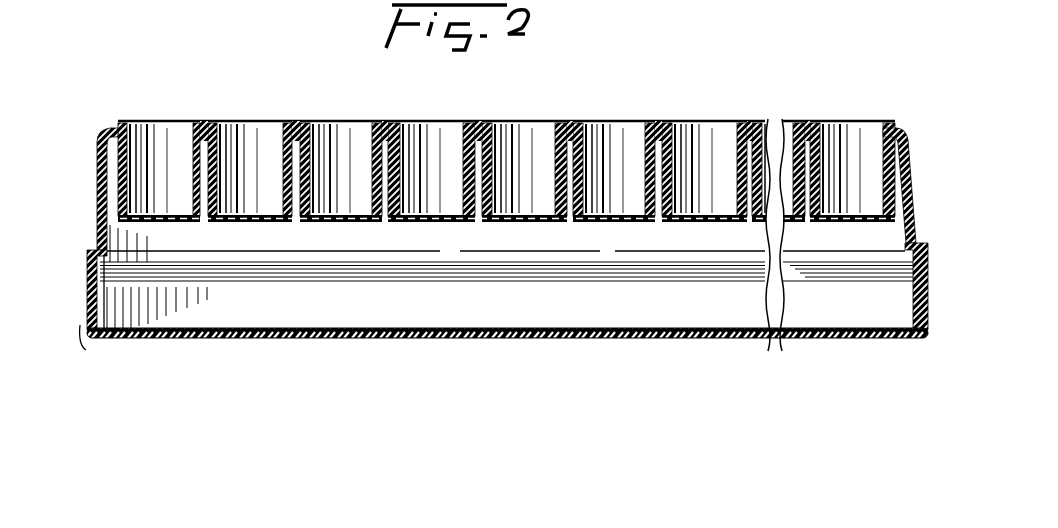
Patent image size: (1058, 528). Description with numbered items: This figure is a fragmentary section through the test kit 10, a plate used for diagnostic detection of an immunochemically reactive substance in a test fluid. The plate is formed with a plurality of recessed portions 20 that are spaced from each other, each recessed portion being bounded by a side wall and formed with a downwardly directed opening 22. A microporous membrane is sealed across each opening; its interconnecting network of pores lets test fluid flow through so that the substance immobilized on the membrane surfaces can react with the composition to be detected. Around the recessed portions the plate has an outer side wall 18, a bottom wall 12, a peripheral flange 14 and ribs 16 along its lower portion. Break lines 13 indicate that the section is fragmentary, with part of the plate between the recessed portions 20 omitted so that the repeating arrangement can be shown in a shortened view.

The tray 10 is at (333, 117).
The bottom wall 12 is at (250, 340).
The break lines 13 is at (757, 338).
The peripheral flange 14 is at (92, 337).
The ribs 16 is at (103, 267).
The side wall 18 is at (97, 158).
The wells 20 is at (230, 125).
The well bottoms 22 is at (415, 222).